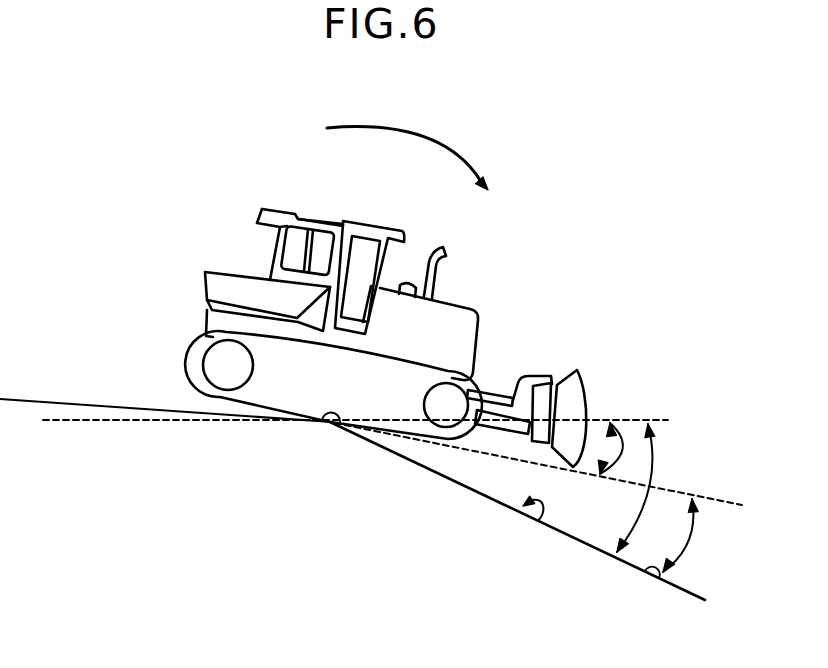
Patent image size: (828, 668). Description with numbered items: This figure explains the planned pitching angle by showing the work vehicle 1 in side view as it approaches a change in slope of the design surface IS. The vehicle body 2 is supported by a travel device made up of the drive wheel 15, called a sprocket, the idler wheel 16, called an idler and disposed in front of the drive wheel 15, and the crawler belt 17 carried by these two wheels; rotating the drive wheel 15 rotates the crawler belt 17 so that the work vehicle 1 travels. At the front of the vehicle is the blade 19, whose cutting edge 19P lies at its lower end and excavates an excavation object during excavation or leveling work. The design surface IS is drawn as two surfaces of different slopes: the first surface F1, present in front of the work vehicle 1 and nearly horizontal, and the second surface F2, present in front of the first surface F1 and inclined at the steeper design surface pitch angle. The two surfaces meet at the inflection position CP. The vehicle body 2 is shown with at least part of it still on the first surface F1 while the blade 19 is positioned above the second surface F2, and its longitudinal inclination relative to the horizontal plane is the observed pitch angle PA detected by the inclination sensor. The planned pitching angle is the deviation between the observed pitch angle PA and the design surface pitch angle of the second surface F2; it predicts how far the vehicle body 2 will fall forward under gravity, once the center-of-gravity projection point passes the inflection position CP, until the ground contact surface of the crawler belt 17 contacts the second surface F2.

The work vehicle 1 is at (258, 153).
The vehicle body 2 is at (462, 293).
The drive wheel 15 is at (218, 357).
The idler wheel 16 is at (478, 386).
The crawler belt 17 is at (232, 396).
The blade 19 is at (568, 372).
The cutting edge 19P is at (585, 460).
The observed pitch angle PA is at (638, 421).
The first surface F1 is at (58, 400).
The second surface F2 is at (657, 577).
The inflection position CP is at (338, 425).
The design surface IS is at (537, 522).